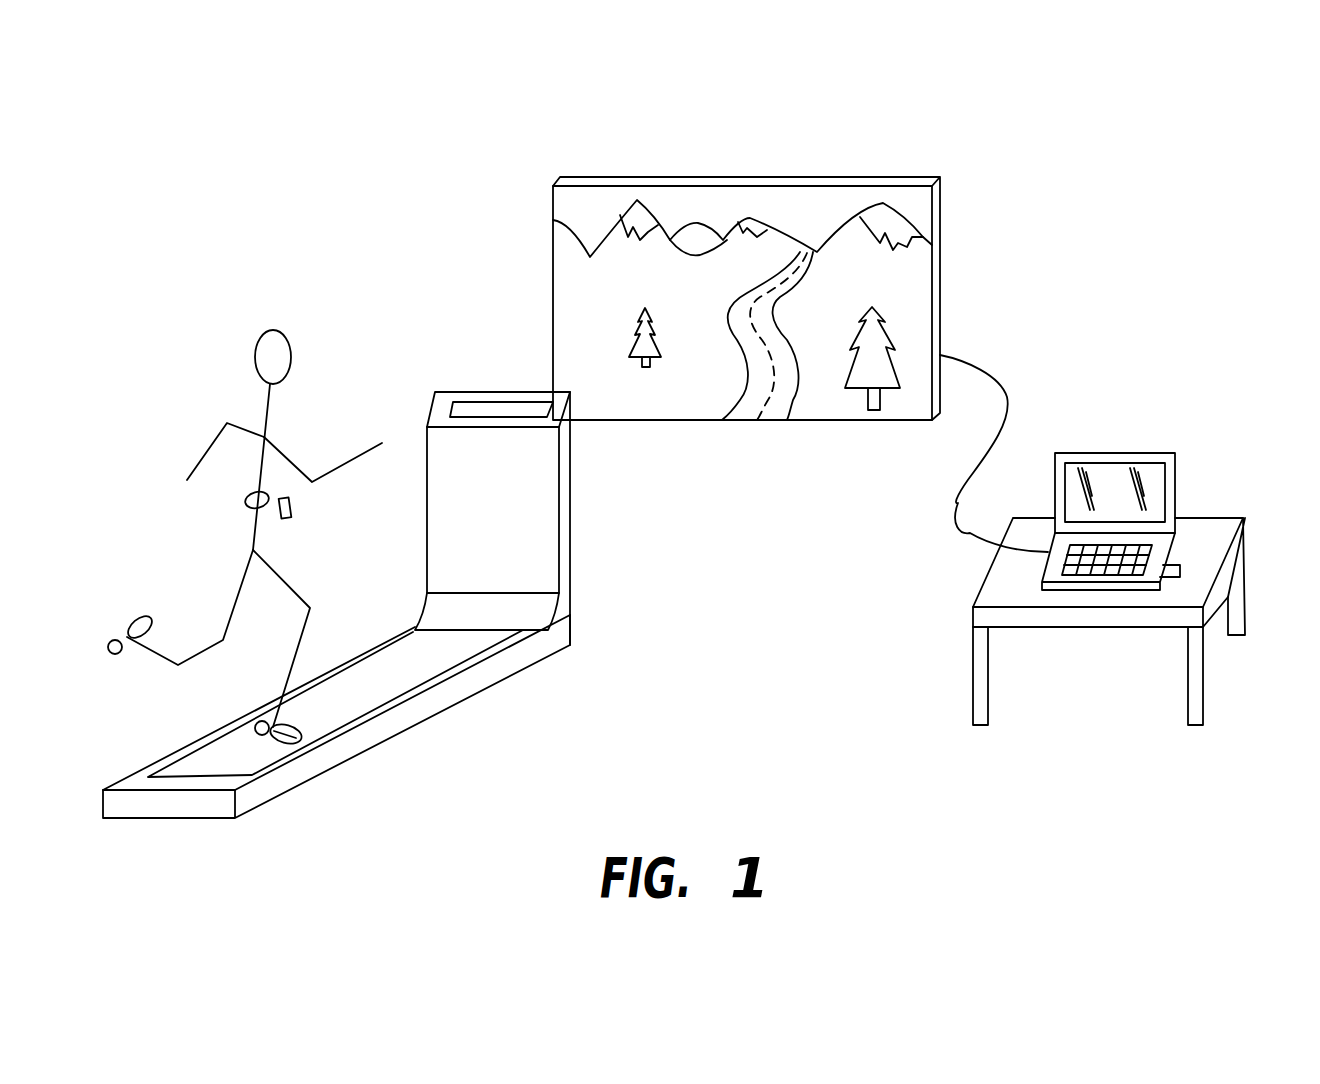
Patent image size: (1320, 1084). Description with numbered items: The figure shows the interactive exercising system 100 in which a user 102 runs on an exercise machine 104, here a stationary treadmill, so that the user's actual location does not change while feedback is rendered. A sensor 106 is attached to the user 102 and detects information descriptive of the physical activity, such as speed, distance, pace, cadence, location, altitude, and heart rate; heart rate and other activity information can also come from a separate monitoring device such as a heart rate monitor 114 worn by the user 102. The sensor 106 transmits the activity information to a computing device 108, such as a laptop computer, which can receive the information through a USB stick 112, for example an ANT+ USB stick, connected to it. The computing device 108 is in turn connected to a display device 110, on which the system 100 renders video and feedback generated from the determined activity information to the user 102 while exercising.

The system 100 is at (1077, 192).
The user 102 is at (247, 338).
The exercise machine 104 is at (528, 392).
The sensor 106 is at (300, 740).
The computing device 108 is at (1172, 452).
The display device 110 is at (812, 177).
The USB stick 112 is at (1180, 570).
The heart rate monitor 114 is at (292, 515).